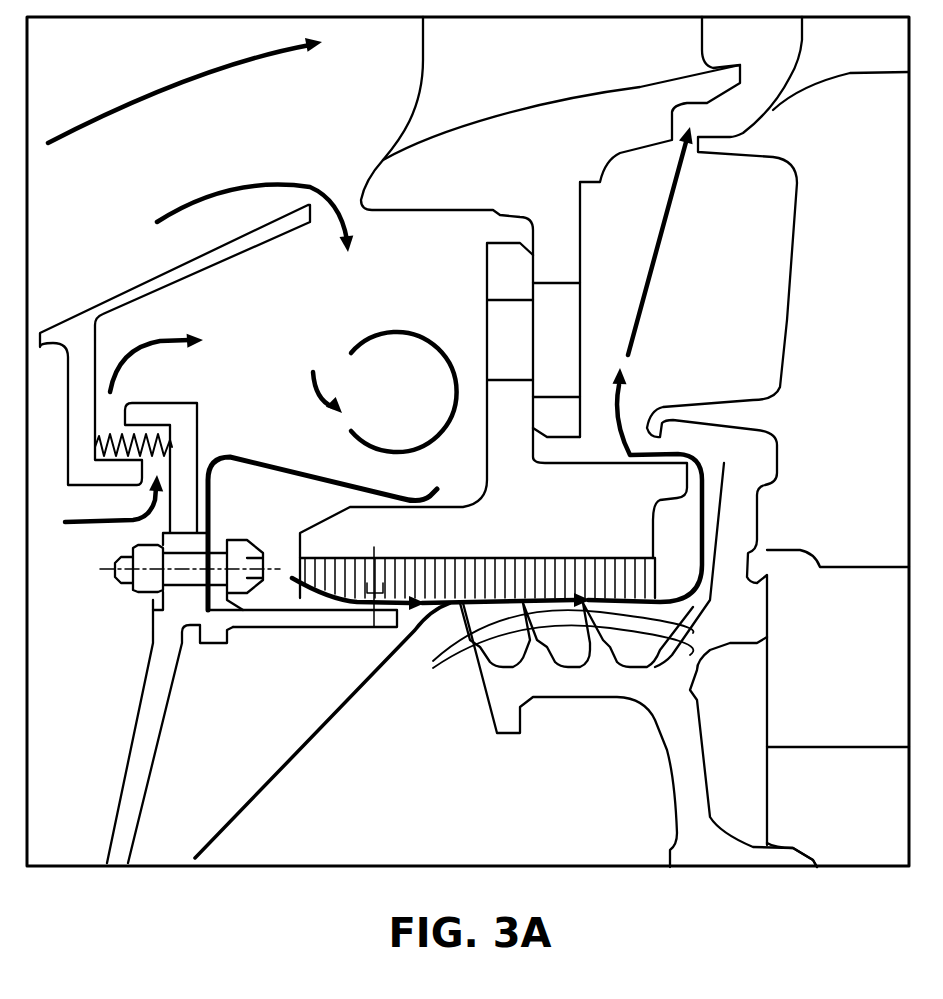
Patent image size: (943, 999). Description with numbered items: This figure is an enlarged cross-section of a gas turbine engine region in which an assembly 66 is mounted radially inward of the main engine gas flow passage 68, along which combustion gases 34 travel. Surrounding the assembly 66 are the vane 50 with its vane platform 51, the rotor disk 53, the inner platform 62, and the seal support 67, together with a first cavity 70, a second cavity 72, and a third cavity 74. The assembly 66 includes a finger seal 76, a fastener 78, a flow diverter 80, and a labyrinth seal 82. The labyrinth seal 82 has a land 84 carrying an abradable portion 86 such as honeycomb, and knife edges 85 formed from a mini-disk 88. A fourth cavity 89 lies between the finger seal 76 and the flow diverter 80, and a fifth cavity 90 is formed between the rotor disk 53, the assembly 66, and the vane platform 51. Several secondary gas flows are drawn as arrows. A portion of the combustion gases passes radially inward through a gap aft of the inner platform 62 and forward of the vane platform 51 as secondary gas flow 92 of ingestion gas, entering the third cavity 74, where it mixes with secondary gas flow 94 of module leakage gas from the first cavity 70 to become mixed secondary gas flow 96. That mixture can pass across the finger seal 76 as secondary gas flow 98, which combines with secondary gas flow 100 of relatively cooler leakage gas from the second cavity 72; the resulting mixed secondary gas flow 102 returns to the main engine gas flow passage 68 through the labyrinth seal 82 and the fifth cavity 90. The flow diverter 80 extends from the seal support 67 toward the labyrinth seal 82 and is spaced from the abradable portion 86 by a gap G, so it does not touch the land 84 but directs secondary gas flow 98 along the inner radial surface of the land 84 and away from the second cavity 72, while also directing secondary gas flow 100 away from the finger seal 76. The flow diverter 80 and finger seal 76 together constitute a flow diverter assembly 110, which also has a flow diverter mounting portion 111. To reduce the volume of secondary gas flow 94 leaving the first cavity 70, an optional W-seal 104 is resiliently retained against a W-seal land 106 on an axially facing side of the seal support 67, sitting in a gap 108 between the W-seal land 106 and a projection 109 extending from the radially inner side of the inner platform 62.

The combustion gases 34 is at (190, 82).
The vane 50 is at (558, 75).
The vane platform 51 is at (558, 173).
The rotor disk 53 is at (861, 409).
The inner platform 62 is at (38, 330).
The assembly 66 is at (267, 428).
The seal support 67 is at (143, 707).
The main engine gas flow passage 68 is at (356, 109).
The first cavity 70 is at (81, 579).
The second cavity 72 is at (486, 800).
The third cavity 74 is at (421, 289).
The finger seal 76 is at (378, 493).
The fastener 78 is at (240, 553).
The flow diverter 80 is at (250, 630).
The labyrinth seal 82 is at (572, 546).
The land 84 is at (558, 504).
The knife edges 85 is at (544, 648).
The abradable portion 86 is at (458, 570).
The mini-disk 88 is at (618, 735).
The fourth cavity 89 is at (336, 521).
The fifth cavity 90 is at (741, 259).
The secondary gas flow 92 is at (225, 192).
The secondary gas flow 94 is at (140, 358).
The mixed secondary gas flow 96 is at (365, 330).
The secondary gas flow 98 is at (292, 595).
The secondary gas flow 100 is at (300, 757).
The mixed secondary gas flow 102 is at (703, 517).
The W-seal 104 is at (120, 440).
The W-seal land 106 is at (157, 440).
The gap 108 is at (100, 423).
The projection 109 is at (95, 463).
The flow diverter assembly 110 is at (266, 658).
The flow diverter mounting portion 111 is at (166, 639).
The gap G is at (375, 642).